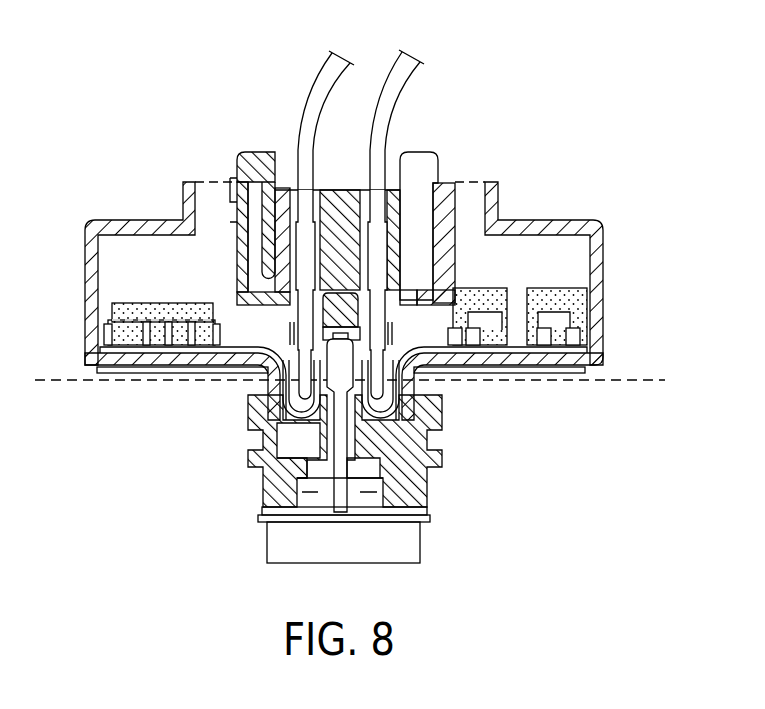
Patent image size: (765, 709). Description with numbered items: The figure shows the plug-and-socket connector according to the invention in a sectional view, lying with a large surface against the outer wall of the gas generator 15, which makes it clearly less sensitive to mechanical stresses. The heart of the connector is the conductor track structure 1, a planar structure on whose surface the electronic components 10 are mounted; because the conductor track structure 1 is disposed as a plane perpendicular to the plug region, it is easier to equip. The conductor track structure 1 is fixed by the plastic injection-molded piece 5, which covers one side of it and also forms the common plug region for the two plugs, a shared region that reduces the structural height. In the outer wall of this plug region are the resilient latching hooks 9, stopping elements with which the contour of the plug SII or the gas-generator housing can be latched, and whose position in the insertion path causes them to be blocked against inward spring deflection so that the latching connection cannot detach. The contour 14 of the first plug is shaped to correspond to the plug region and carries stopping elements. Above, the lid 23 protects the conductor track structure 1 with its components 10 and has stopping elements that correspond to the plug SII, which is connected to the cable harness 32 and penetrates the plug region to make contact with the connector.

The conductor track structure 1 is at (175, 350).
The plastic injection-molded piece 5 is at (398, 444).
The resilient latching hooks 9 is at (268, 404).
The components 10 is at (190, 290).
The contour of plug S I 14 is at (443, 414).
The gas generator 15 is at (650, 364).
The lid 23 is at (564, 203).
The cable harness 32 is at (302, 137).
The plug S II SII is at (278, 100).